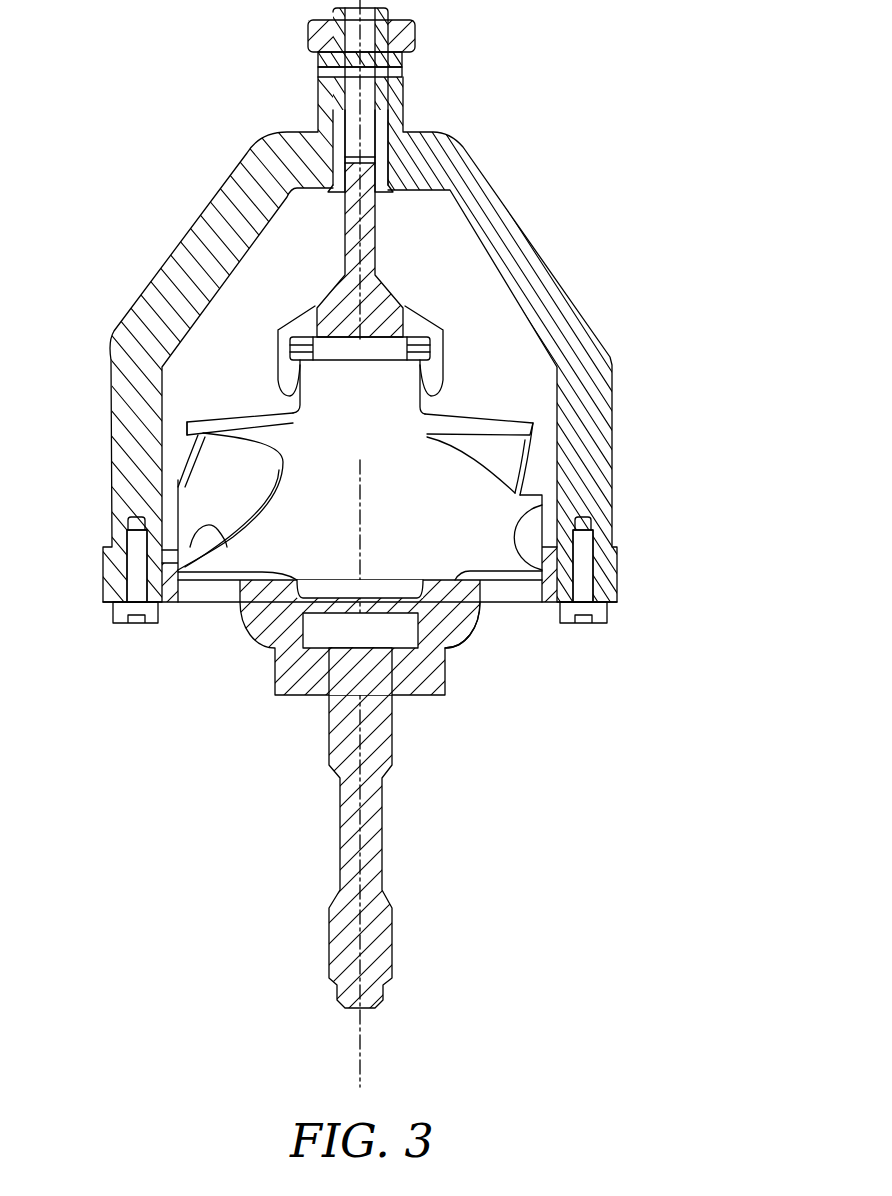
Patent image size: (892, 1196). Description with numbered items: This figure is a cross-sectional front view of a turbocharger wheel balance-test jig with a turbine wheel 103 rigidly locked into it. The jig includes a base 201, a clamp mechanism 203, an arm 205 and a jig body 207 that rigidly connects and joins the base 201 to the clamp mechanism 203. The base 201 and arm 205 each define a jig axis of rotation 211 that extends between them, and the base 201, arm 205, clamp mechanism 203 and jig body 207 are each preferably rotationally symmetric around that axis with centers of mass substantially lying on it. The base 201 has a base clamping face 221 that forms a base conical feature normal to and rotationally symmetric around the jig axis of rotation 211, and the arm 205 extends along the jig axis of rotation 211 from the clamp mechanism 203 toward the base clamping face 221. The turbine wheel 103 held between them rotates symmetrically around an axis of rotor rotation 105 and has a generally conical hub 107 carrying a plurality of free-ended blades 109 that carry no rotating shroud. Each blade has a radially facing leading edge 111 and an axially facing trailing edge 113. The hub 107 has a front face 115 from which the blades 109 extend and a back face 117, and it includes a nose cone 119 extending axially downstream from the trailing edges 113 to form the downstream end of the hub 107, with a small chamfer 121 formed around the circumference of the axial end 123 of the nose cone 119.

The turbine wheel 103 is at (363, 495).
The axis of rotor rotation 105 is at (450, 517).
The hub 107 is at (305, 523).
The free-ended blades 109 is at (227, 472).
The leading edge 111 is at (178, 513).
The trailing edge 113 is at (480, 423).
The front face 115 is at (200, 545).
The back face 117 is at (450, 576).
The nose cone 119 is at (360, 402).
The chamfer 121 is at (445, 383).
The axial end 123 is at (360, 347).
The base 201 is at (407, 678).
The clamp mechanism 203 is at (403, 86).
The arm 205 is at (372, 222).
The jig body 207 is at (512, 226).
The jig axis of rotation 211 is at (385, 733).
The base clamping face 221 is at (517, 513).